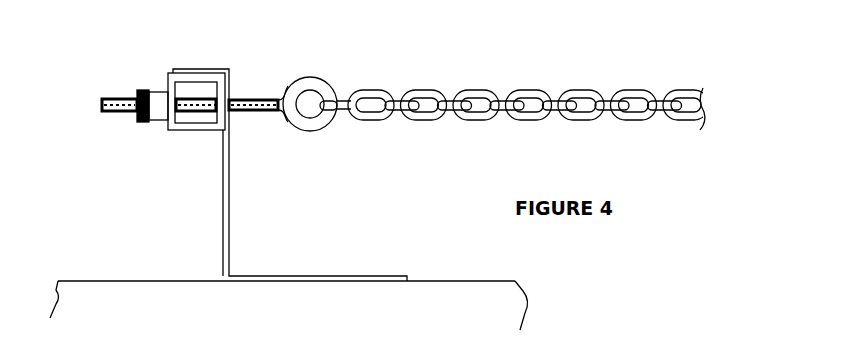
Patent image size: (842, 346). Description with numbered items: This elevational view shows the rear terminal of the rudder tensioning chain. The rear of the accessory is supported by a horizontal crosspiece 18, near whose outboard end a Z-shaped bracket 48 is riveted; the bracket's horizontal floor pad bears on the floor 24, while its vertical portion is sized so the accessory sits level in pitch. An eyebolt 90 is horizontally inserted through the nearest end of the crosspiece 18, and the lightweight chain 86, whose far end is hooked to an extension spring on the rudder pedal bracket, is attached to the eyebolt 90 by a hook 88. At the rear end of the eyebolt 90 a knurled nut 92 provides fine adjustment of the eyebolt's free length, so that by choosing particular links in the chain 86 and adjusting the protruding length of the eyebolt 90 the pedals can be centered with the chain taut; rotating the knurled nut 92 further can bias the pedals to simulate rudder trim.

The horizontal crosspiece 18 is at (197, 130).
The floor 24 is at (477, 272).
The Z-shaped bracket 48 is at (229, 223).
The lightweight chain 86 is at (485, 121).
The hook 88 is at (341, 114).
The eyebolt 90 is at (312, 131).
The knurled nut 92 is at (142, 90).